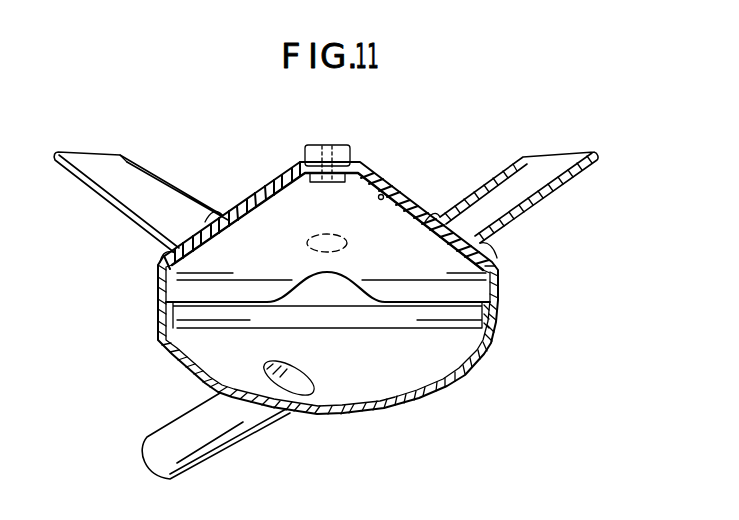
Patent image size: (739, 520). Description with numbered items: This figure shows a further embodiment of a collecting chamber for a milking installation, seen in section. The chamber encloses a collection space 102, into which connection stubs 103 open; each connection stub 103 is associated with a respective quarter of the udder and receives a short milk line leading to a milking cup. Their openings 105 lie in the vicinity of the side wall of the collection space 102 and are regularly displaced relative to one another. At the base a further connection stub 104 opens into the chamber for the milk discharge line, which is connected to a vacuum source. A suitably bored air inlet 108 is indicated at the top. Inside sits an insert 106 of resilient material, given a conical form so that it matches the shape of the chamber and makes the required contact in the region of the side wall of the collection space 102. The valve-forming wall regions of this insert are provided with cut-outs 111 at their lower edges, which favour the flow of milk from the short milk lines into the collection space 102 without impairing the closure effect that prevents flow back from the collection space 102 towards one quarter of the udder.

The collection space 102 is at (415, 370).
The connection stubs 103 is at (122, 185).
The connection stub 104 is at (233, 428).
The openings 105 is at (205, 242).
The insert 106 is at (382, 196).
The air inlet 108 is at (329, 150).
The cut-outs 111 is at (346, 289).